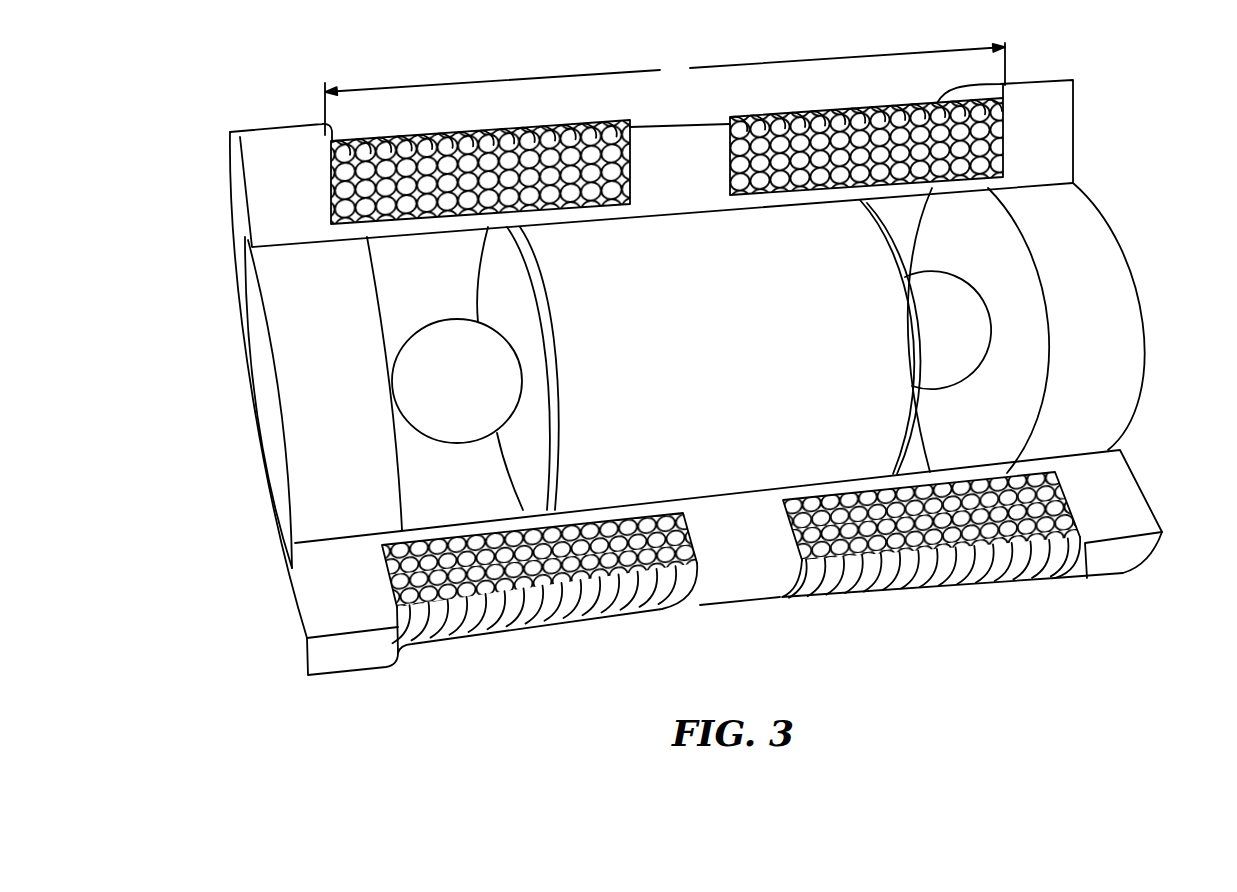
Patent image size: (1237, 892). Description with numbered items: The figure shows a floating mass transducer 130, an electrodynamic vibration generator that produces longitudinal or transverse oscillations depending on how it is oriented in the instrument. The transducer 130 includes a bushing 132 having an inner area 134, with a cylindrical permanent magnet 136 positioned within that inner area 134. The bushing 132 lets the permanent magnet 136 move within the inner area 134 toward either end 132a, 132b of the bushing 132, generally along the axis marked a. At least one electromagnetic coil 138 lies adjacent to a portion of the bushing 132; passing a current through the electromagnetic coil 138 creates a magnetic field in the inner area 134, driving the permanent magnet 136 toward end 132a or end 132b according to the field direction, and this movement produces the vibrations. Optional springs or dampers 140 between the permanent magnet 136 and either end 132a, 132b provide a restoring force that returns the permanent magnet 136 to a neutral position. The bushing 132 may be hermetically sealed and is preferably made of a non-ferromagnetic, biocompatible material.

The floating mass transducer 130 is at (291, 91).
The bushing 132 is at (1110, 493).
The end of the bushing 132a is at (400, 497).
The end of the bushing 132b is at (1052, 300).
The inner area 134 is at (490, 545).
The permanent magnet 136 is at (732, 436).
The electromagnetic coil 138 is at (367, 190).
The spring or damper 140 is at (470, 397).